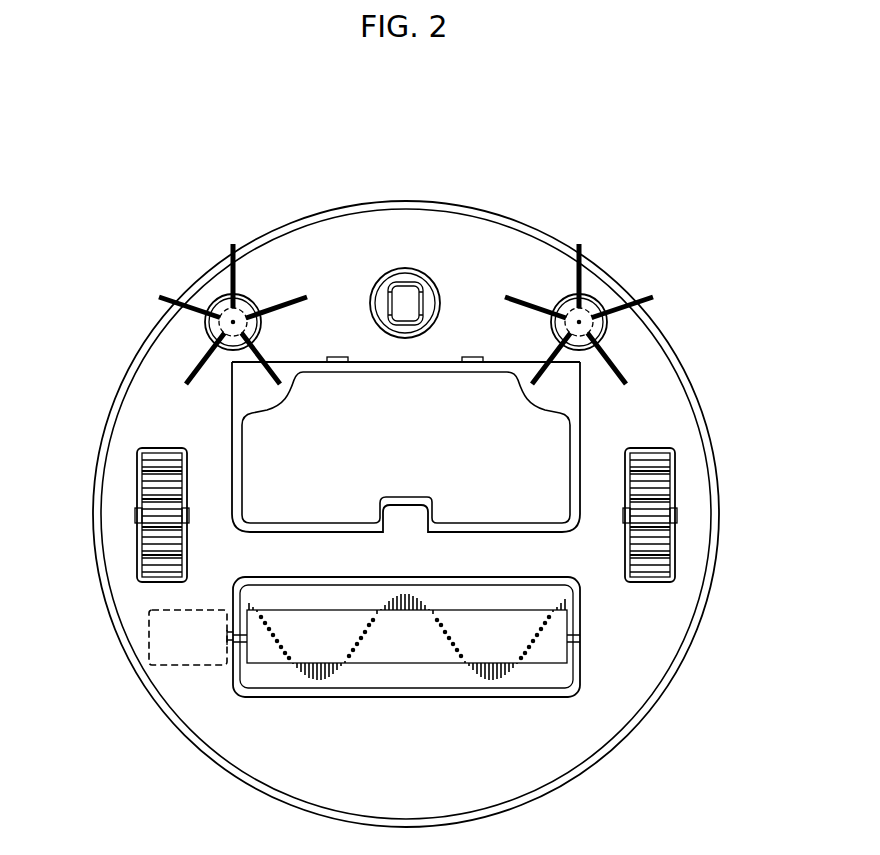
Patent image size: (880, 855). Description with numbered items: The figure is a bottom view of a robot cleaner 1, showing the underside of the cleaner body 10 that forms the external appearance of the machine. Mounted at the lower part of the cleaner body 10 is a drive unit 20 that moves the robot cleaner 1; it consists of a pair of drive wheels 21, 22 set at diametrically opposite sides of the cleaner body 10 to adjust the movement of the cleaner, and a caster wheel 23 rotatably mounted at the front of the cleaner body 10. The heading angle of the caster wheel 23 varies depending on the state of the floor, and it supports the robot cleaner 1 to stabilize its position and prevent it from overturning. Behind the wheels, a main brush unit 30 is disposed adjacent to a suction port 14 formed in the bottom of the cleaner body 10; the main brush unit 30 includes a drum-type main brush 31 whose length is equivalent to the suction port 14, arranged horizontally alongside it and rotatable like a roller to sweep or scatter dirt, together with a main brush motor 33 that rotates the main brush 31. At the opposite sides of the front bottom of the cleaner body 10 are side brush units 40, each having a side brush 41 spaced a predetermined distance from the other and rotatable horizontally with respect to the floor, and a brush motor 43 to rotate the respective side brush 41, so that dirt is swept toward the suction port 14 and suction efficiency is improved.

The robot cleaner 1 is at (404, 109).
The cleaner body 10 is at (667, 690).
The suction port 14 is at (553, 598).
The drive unit 20 is at (408, 515).
The drive wheel 21 is at (660, 487).
The drive wheel 22 is at (148, 487).
The caster wheel 23 is at (412, 292).
The main brush unit 30 is at (441, 668).
The main brush 31 is at (353, 655).
The main brush motor 33 is at (149, 636).
The side brush unit 40 is at (208, 295).
The side brush 41 is at (232, 250).
The brush motor 43 is at (218, 326).